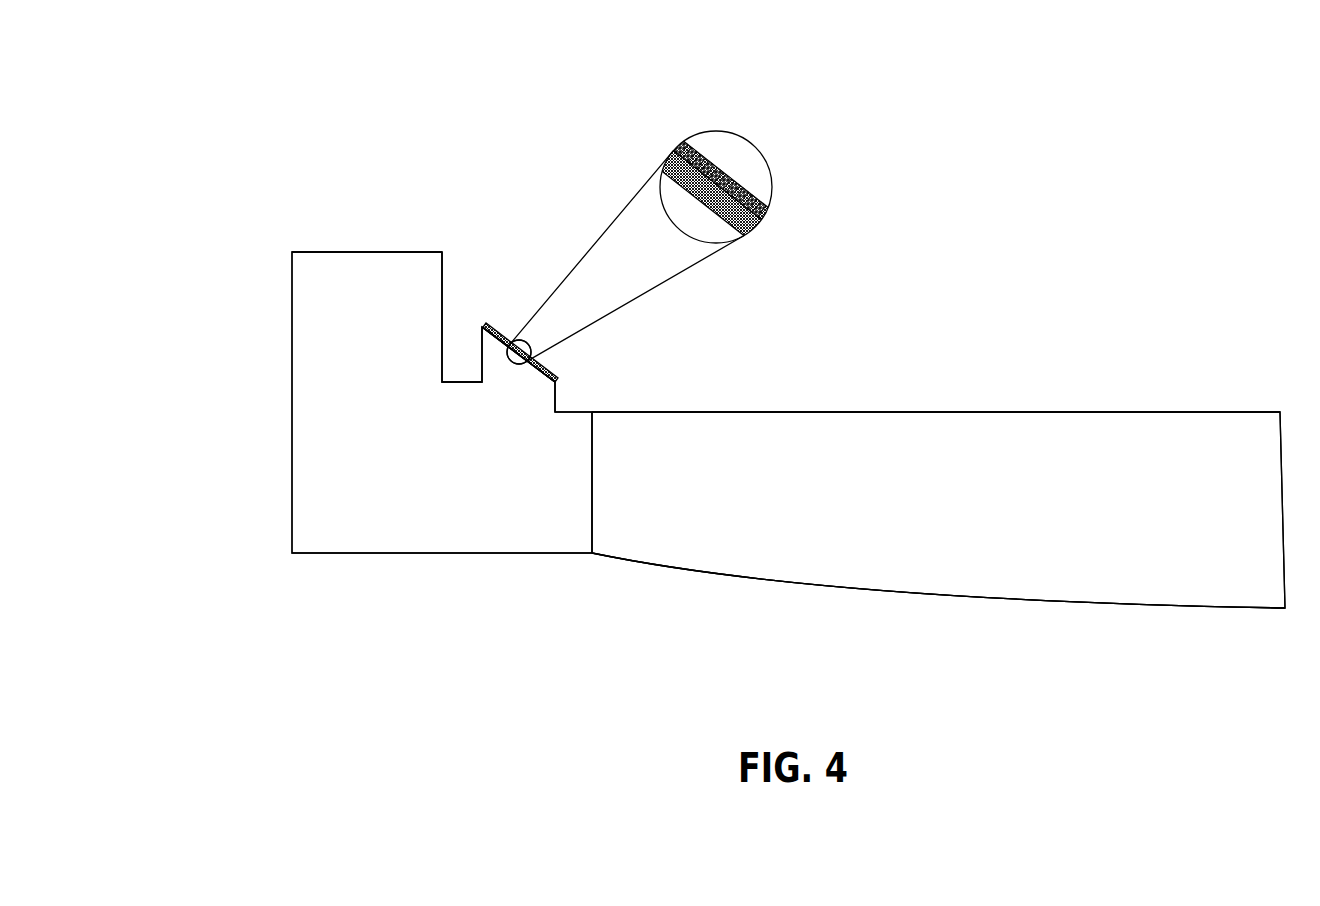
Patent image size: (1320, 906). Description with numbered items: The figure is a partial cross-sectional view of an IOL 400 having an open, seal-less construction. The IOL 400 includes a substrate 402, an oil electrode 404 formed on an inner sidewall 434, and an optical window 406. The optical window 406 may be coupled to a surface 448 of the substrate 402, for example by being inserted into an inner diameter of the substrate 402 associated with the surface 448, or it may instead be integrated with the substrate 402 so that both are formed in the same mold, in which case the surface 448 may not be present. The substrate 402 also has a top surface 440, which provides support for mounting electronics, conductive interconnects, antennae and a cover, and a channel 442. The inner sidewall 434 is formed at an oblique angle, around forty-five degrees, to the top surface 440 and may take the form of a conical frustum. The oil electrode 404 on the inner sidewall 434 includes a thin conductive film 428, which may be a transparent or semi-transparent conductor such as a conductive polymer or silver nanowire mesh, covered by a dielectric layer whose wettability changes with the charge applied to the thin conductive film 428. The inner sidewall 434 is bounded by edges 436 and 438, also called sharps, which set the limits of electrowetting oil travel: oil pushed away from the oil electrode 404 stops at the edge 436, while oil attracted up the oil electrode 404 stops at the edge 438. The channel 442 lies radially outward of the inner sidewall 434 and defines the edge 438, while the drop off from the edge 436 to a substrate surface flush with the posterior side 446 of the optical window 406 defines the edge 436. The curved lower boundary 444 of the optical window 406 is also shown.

The IOL 400 is at (1076, 108).
The substrate 402 is at (668, 199).
The oil electrode 404 is at (532, 357).
The optical window 406 is at (1104, 522).
The thin conductive film 428 is at (665, 158).
The inner sidewall 434 is at (542, 378).
The edge 436 is at (562, 385).
The edge 438 is at (486, 310).
The top surface 440 is at (360, 253).
The channel 442 is at (460, 320).
The curved lower surface 444 is at (940, 597).
The posterior side 446 is at (1123, 412).
The surface 448 is at (592, 497).